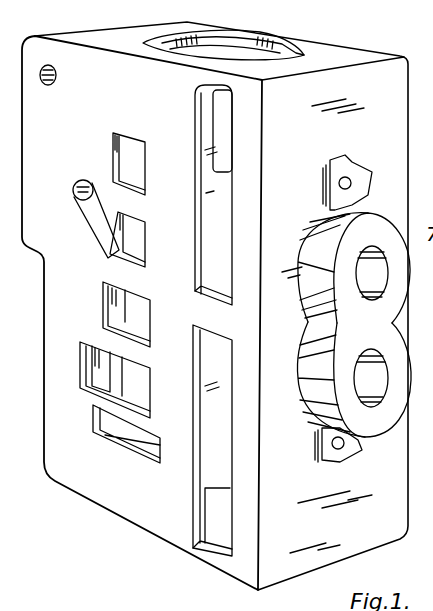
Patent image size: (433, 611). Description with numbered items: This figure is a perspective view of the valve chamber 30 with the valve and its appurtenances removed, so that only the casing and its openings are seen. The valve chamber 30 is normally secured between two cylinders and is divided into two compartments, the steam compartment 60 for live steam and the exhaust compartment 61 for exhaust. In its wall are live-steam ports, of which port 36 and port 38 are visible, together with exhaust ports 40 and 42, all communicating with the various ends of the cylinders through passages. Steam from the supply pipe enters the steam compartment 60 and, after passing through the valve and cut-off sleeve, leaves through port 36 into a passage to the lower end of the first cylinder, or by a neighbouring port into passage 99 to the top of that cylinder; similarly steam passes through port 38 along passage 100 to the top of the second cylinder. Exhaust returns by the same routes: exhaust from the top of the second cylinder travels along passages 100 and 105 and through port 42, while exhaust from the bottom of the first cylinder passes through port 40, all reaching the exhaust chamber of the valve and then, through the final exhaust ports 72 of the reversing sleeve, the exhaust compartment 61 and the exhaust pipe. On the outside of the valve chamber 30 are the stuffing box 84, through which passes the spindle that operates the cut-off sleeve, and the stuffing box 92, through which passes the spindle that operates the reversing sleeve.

The valve chamber 30 is at (215, 306).
The live-steam port 36 is at (132, 170).
The live-steam port 38 is at (134, 244).
The exhaust port 40 is at (112, 313).
The exhaust port 42 is at (103, 386).
The steam compartment 60 is at (207, 113).
The exhaust compartment 61 is at (212, 440).
The final exhaust ports 72 is at (128, 446).
The stuffing box 84 is at (354, 239).
The stuffing box 92 is at (354, 392).
The passage 99 is at (57, 74).
The passage 100 is at (74, 186).
The passage 105 is at (90, 362).